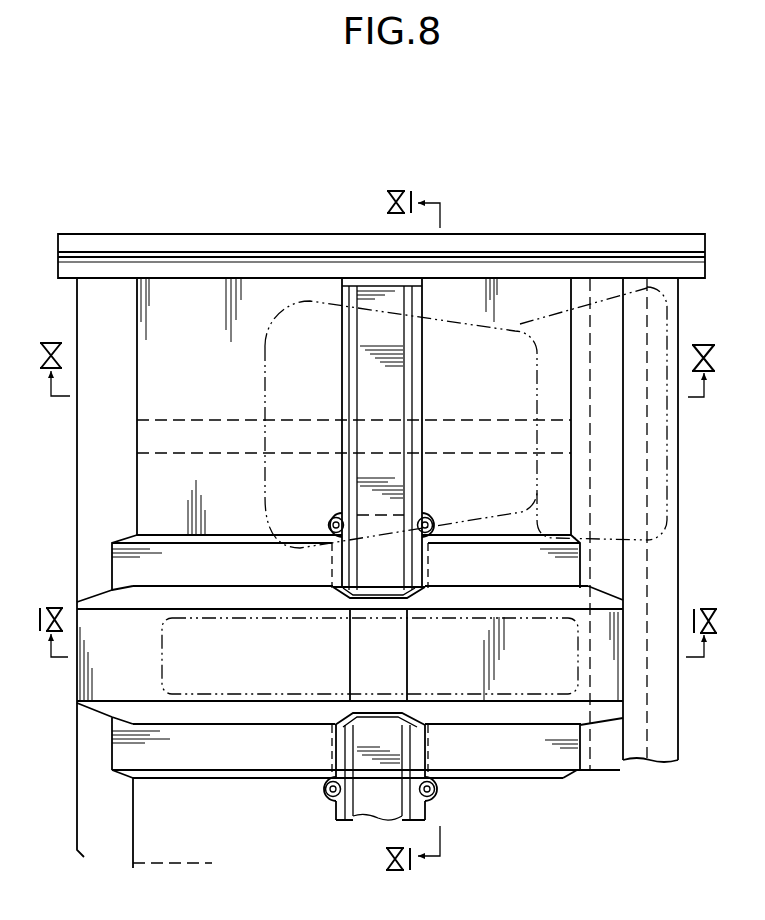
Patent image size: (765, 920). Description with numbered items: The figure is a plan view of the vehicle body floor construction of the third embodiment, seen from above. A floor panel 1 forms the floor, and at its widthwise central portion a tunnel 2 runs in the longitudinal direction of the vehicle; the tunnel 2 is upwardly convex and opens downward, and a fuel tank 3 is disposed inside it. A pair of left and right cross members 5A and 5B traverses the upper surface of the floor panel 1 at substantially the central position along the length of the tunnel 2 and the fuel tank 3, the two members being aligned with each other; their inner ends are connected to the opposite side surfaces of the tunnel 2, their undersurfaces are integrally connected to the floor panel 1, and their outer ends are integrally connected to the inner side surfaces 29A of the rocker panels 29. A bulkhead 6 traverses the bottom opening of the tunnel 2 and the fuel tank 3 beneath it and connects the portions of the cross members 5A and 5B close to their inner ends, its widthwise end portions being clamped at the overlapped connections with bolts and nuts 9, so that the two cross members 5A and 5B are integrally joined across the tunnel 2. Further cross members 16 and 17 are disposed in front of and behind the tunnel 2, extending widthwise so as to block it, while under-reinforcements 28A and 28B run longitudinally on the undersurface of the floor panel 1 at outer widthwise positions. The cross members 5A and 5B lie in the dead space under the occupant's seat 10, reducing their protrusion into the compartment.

The rocker panel 29 is at (203, 231).
The inner side surface of rocker panel 29A is at (273, 268).
The cross member 16 is at (90, 498).
The cross member 17 is at (660, 570).
The floor panel 1 is at (235, 507).
The under-reinforcement 28B is at (194, 419).
The cross member 5A is at (401, 390).
The nut 9 is at (428, 517).
The occupant's seat 10 is at (490, 326).
The tunnel 2 is at (620, 693).
The bulkhead 6 is at (410, 661).
The fuel tank 3 is at (576, 704).
The under-reinforcement 28A is at (170, 862).
The cross member 5B is at (372, 806).